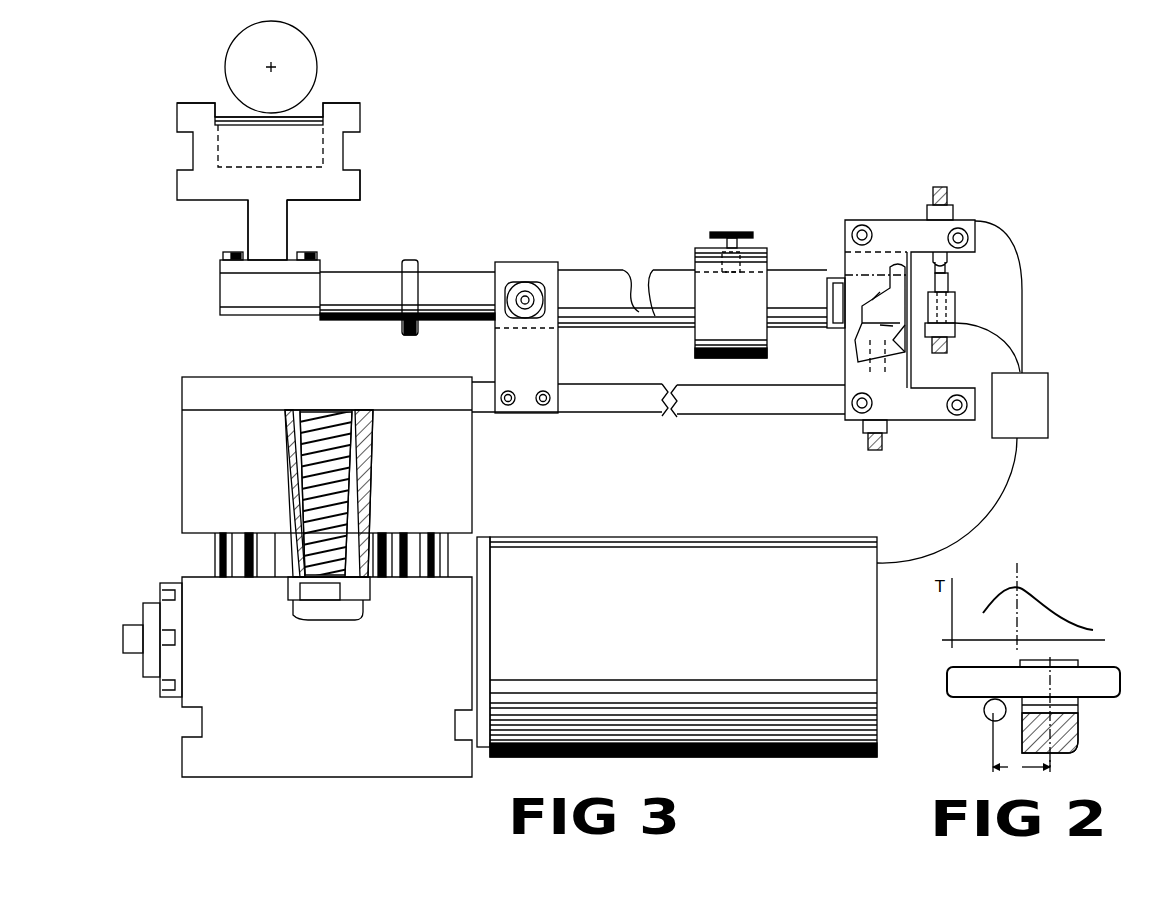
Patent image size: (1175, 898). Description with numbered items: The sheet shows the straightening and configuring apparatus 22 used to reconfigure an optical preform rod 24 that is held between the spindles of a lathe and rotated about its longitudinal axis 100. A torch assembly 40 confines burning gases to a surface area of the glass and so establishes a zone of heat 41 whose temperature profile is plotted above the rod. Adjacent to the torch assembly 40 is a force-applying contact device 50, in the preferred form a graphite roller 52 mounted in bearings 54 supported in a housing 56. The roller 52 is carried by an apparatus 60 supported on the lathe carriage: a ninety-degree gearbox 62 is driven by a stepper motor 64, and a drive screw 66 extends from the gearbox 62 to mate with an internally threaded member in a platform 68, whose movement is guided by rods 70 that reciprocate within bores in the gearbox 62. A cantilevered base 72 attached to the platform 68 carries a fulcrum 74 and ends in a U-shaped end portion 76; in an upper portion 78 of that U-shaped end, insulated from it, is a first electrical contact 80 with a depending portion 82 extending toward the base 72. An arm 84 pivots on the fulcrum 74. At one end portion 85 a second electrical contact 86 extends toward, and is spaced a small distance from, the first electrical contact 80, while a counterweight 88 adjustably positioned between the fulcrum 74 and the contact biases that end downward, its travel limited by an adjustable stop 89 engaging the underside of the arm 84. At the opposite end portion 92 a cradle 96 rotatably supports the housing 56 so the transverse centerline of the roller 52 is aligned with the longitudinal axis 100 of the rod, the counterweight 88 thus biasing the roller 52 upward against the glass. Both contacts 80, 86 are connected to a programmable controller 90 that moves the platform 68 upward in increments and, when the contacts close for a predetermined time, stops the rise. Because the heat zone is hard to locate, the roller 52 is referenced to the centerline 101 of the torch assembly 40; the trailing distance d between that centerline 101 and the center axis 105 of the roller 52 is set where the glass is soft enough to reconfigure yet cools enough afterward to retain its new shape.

In FIG. 3, the straightening and configuring apparatus 22 is at (100, 296).
In FIG. 3, the preform rod 24 is at (318, 58).
In FIG. 2, the preform rod 24 is at (1108, 668).
In FIG. 2, the torch assembly 40 is at (1082, 733).
In FIG. 2, the zone of heat 41 is at (1068, 618).
In FIG. 3, the contact device 50 is at (370, 194).
In FIG. 3, the roller 52 is at (312, 114).
In FIG. 2, the roller 52 is at (984, 714).
In FIG. 3, the bearings 54 is at (180, 113).
In FIG. 3, the housing 56 is at (362, 113).
In FIG. 3, the apparatus 60 is at (178, 172).
In FIG. 3, the gearbox 62 is at (182, 747).
In FIG. 3, the stepper motor 64 is at (653, 542).
In FIG. 3, the drive screw 66 is at (353, 514).
In FIG. 3, the platform 68 is at (187, 428).
In FIG. 3, the rods 70 is at (222, 557).
In FIG. 3, the cantilevered base 72 is at (627, 407).
In FIG. 3, the fulcrum 74 is at (495, 357).
In FIG. 3, the U-shaped end portion 76 is at (853, 341).
In FIG. 3, the upper portion 78 is at (878, 221).
In FIG. 3, the first electrical contact 80 is at (932, 195).
In FIG. 3, the depending portion 82 is at (947, 263).
In FIG. 3, the arm 84 is at (580, 272).
In FIG. 3, the end portion 85 is at (893, 327).
In FIG. 3, the second electrical contact 86 is at (950, 288).
In FIG. 3, the counterweight 88 is at (760, 264).
In FIG. 3, the adjustable stop 89 is at (891, 307).
In FIG. 3, the programmable controller 90 is at (1047, 375).
In FIG. 3, the opposite end portion 92 is at (222, 296).
In FIG. 3, the cradle 96 is at (283, 243).
In FIG. 3, the longitudinal axis 100 is at (266, 67).
In FIG. 2, the centerline 101 is at (1052, 765).
In FIG. 2, the center axis 105 is at (993, 748).